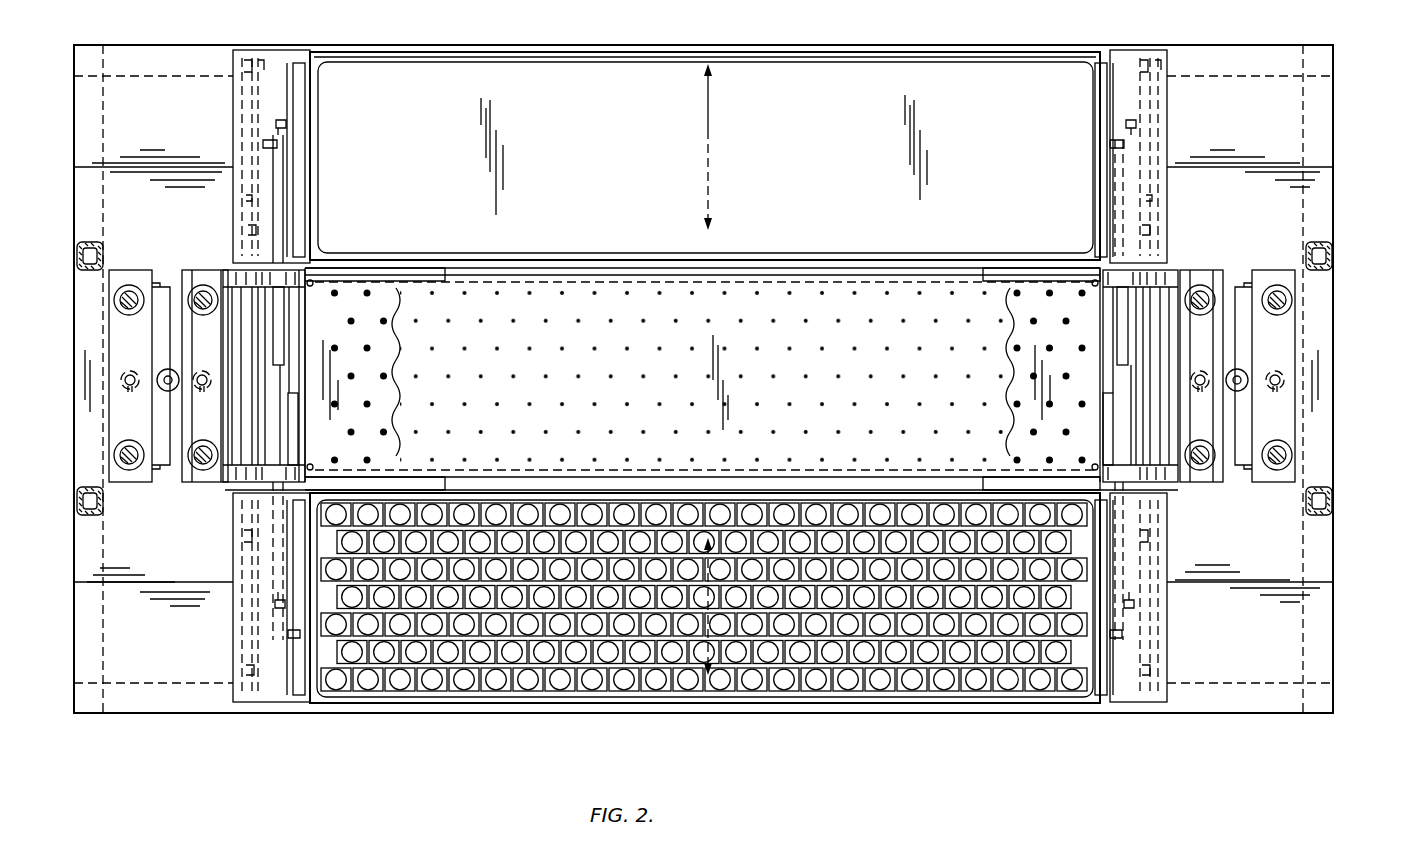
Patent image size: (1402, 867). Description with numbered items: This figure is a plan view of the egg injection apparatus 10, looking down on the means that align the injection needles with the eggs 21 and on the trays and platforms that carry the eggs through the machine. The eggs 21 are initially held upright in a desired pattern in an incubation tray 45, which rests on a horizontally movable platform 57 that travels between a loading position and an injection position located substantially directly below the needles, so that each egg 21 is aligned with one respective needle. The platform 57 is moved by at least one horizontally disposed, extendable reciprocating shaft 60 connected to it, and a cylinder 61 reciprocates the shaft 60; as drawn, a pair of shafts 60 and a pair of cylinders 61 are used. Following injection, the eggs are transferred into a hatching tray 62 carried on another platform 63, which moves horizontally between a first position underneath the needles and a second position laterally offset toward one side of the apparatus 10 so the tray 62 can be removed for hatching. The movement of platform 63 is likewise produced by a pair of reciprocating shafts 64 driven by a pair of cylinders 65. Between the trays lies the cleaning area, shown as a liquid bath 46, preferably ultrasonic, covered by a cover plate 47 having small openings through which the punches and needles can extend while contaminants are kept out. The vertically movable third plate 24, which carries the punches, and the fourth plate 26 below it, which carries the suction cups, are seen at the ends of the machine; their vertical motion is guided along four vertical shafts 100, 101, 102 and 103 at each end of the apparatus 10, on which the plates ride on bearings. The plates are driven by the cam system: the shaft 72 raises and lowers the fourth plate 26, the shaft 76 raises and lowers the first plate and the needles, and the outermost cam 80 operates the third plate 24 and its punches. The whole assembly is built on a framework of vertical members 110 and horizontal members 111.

The apparatus 10 is at (1050, 730).
The egg 21 is at (848, 508).
The third plate 24 is at (108, 408).
The fourth plate 26 is at (370, 272).
The incubation tray 45 is at (392, 702).
The liquid bath 46 is at (652, 286).
The cover plate 47 is at (640, 367).
The platform 57 is at (1170, 645).
The reciprocating shaft 60 is at (290, 428).
The cylinder 61 is at (284, 320).
The hatching tray 62 is at (583, 57).
The platform 63 is at (1122, 62).
The reciprocating shaft 64 is at (290, 340).
The cylinder 65 is at (282, 450).
The shaft 72 is at (208, 372).
The shaft 76 is at (160, 372).
The cam 80 is at (124, 380).
The vertical shaft 100 is at (130, 290).
The vertical shaft 101 is at (130, 468).
The vertical shaft 102 is at (205, 468).
The vertical shaft 103 is at (205, 288).
The vertical member 110 is at (77, 253).
The horizontal member 111 is at (1278, 72).